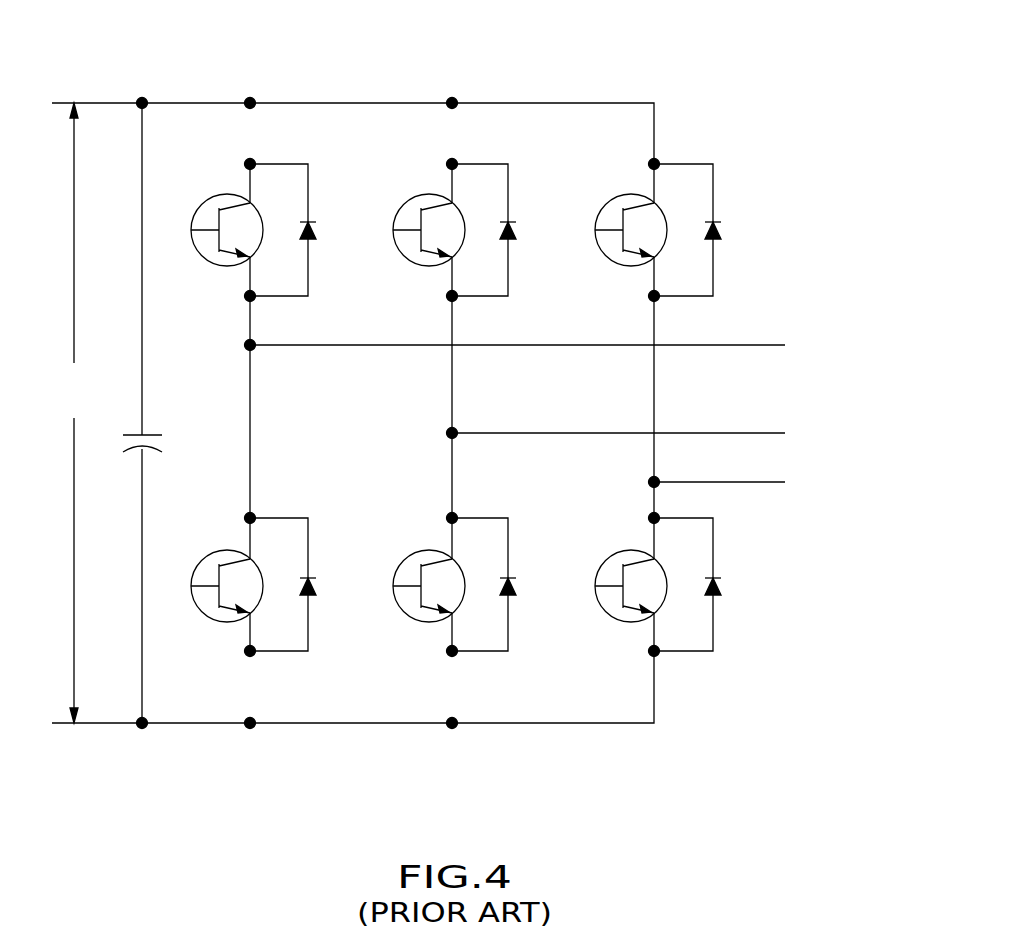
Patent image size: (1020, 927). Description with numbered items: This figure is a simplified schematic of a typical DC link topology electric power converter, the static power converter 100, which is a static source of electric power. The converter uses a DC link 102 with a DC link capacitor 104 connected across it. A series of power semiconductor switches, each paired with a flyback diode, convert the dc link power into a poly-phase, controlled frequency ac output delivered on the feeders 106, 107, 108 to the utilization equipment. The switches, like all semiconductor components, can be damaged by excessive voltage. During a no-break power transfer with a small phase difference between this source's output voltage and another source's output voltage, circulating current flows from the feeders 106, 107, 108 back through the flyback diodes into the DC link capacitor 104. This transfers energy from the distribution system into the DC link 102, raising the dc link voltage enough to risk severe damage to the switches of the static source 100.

The static power converter 100 is at (560, 70).
The DC link 102 is at (103, 103).
The DC link capacitor 104 is at (148, 430).
The feeder 106 is at (746, 345).
The feeder 107 is at (701, 433).
The feeder 108 is at (728, 487).